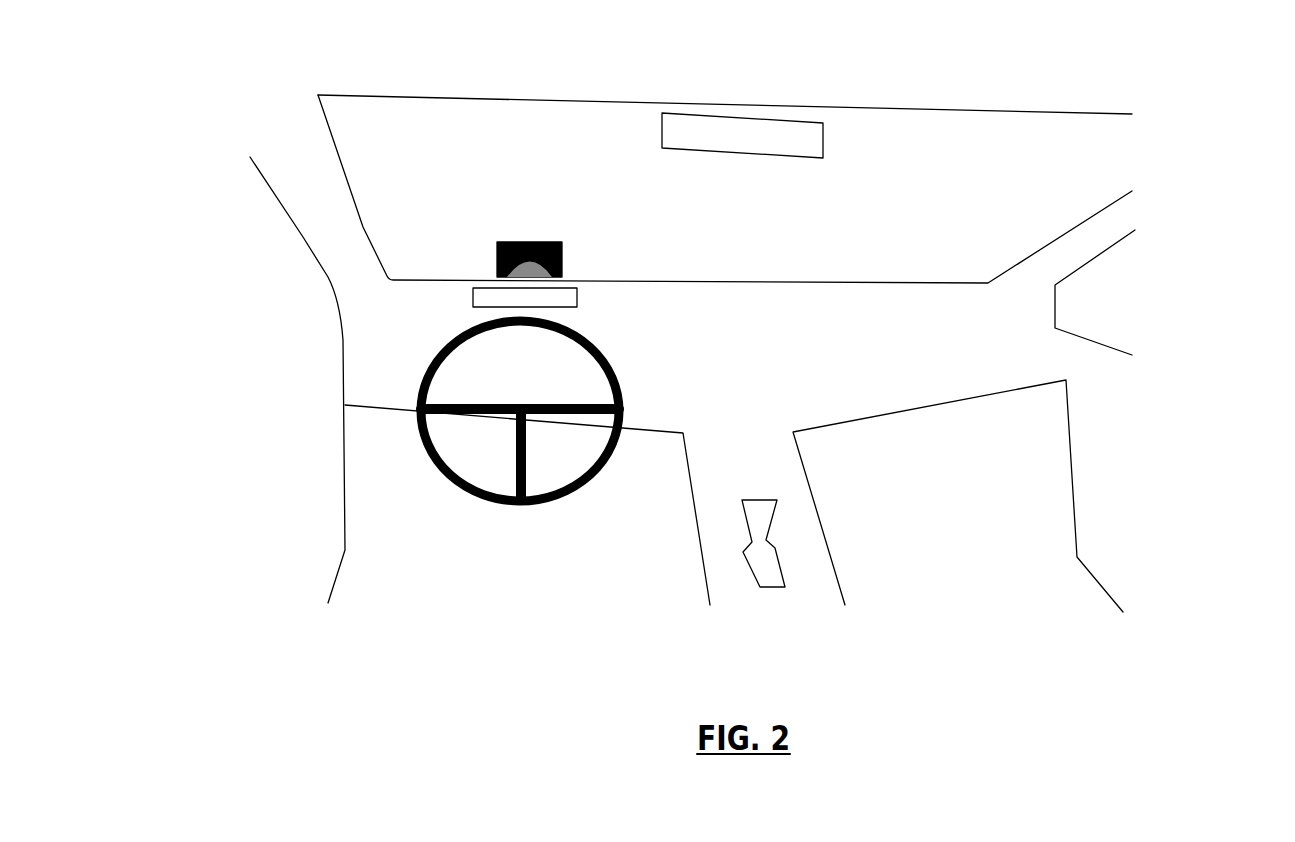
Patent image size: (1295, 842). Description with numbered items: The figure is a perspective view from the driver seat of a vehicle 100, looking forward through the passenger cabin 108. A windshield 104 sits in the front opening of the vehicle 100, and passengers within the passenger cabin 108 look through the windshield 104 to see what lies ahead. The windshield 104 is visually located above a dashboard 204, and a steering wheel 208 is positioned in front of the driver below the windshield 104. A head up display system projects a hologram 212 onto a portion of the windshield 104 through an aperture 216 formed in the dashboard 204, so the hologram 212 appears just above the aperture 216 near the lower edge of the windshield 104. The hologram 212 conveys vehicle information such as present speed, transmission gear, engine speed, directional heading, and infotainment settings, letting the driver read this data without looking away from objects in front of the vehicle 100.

The vehicle 100 is at (302, 143).
The windshield 104 is at (447, 213).
The passenger cabin 108 is at (998, 233).
The dashboard 204 is at (412, 323).
The steering wheel 208 is at (600, 348).
The hologram 212 is at (478, 249).
The aperture 216 is at (473, 293).